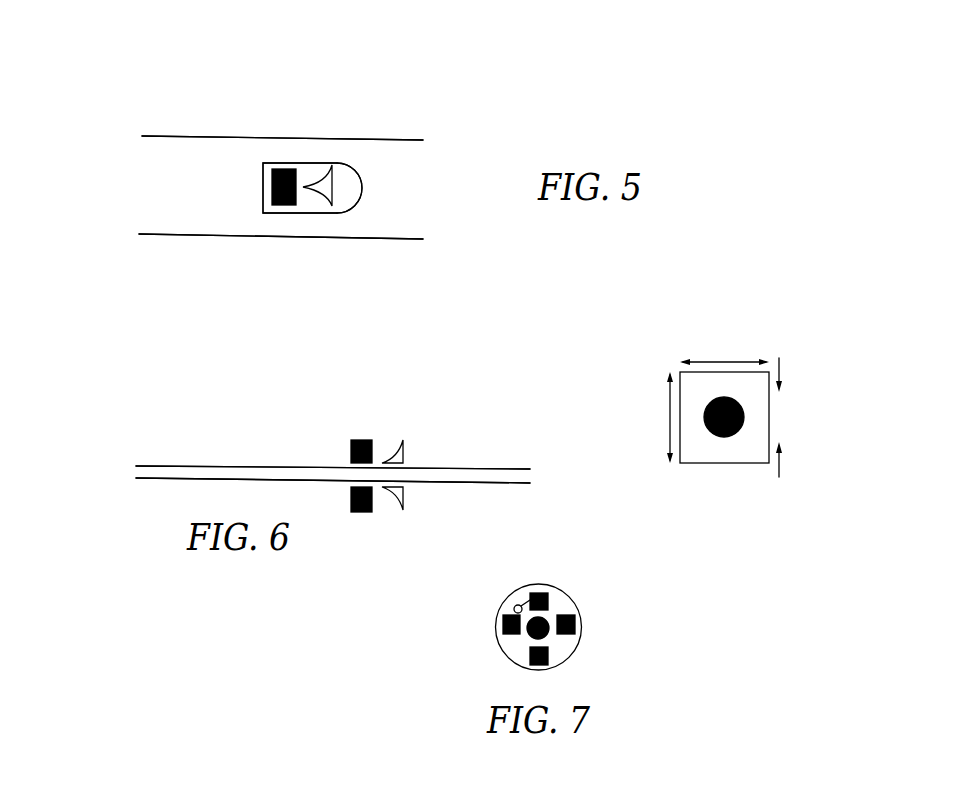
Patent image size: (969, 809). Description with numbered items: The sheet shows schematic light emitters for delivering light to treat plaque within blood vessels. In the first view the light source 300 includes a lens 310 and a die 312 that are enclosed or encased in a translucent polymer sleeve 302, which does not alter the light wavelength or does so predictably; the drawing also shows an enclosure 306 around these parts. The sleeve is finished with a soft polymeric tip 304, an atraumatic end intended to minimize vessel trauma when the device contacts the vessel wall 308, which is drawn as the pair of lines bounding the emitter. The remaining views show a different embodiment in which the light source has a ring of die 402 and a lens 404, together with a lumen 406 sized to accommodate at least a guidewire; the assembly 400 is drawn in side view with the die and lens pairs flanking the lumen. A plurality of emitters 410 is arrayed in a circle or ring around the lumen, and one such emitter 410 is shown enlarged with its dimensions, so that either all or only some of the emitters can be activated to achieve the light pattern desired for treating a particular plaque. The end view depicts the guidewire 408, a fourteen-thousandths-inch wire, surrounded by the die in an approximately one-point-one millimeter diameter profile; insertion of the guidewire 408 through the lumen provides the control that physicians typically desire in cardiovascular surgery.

In FIG. 5, the light source 300 is at (447, 178).
In FIG. 5, the translucent polymer sleeve 302 is at (298, 214).
In FIG. 5, the soft polymeric tip 304 is at (361, 190).
In FIG. 5, the capsule 306 is at (298, 162).
In FIG. 5, the vessel wall 308 is at (170, 137).
In FIG. 5, the lens 310 is at (334, 184).
In FIG. 5, the die 312 is at (285, 168).
In FIG. 6, the wire assembly 400 is at (122, 474).
In FIG. 6, the ring of die 402 is at (361, 440).
In FIG. 7, the ring of die 402 is at (502, 621).
In FIG. 6, the lens 404 is at (405, 440).
In FIG. 6, the lumen 406 is at (422, 478).
In FIG. 7, the guidewire 408 is at (547, 635).
In FIG. 6, the emitters 410 is at (677, 328).